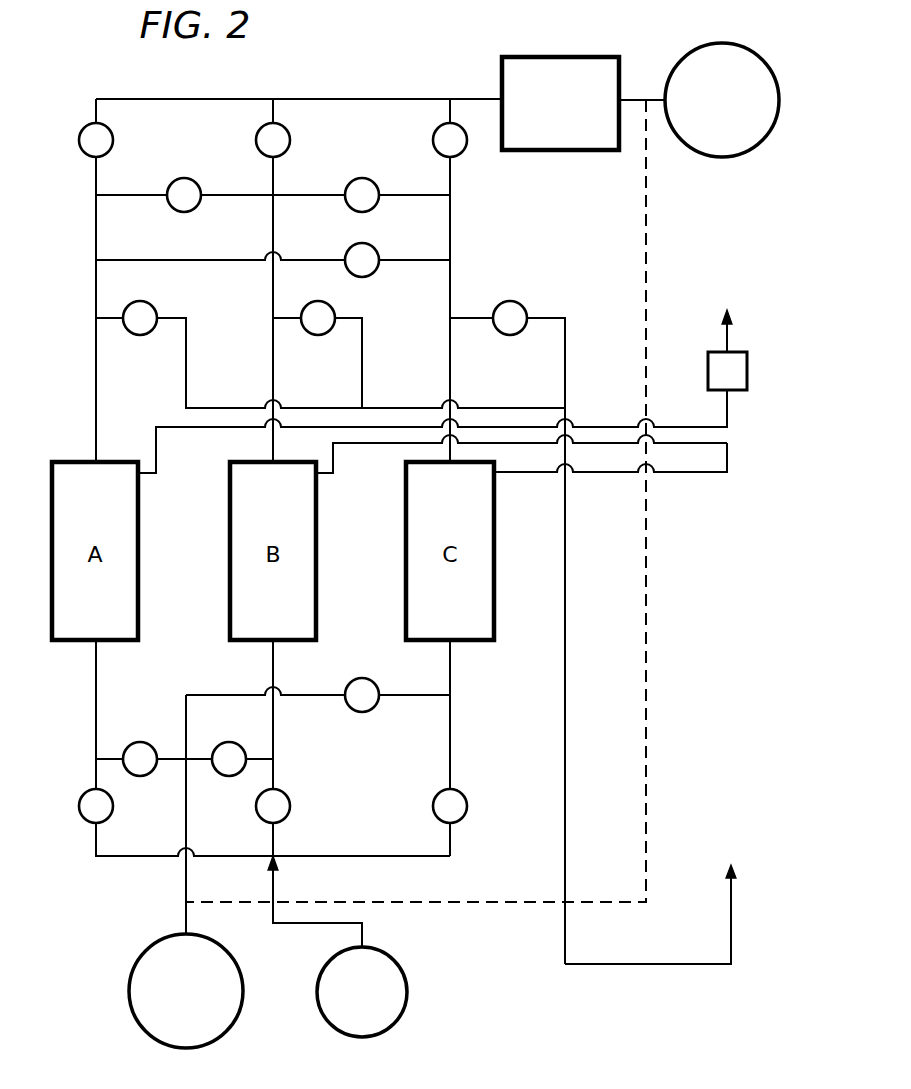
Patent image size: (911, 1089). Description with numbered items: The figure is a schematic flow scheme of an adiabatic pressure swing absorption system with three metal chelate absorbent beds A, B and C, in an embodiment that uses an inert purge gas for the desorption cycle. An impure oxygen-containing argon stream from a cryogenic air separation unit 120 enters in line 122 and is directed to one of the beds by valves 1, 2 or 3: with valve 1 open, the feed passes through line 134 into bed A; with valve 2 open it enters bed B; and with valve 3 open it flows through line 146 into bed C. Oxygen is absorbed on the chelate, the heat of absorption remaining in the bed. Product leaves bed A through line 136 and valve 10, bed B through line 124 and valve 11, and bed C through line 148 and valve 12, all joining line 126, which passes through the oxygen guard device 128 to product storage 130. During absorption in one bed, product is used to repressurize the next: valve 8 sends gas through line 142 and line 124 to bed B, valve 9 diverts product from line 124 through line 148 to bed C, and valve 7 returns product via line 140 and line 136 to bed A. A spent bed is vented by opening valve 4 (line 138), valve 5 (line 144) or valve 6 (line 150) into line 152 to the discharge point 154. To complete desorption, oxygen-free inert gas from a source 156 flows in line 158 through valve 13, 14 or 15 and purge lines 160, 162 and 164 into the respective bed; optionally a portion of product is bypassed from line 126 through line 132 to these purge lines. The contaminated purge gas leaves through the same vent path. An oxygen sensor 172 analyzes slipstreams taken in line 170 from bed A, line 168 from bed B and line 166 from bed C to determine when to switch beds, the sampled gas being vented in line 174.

The valve 1 is at (79, 806).
The valve 2 is at (289, 812).
The valve 3 is at (465, 814).
The valve 4 is at (153, 307).
The valve 5 is at (331, 307).
The valve 6 is at (518, 301).
The valve 7 is at (372, 246).
The valve 8 is at (172, 183).
The valve 9 is at (350, 182).
The valve 10 is at (79, 140).
The valve 11 is at (257, 135).
The valve 12 is at (434, 135).
The valve 13 is at (135, 776).
The valve 14 is at (218, 773).
The valve 15 is at (372, 710).
The cryogenic air separation unit 120 is at (405, 970).
The line 122 is at (273, 878).
The line 124 is at (273, 228).
The line 126 is at (355, 99).
The oxygen guard device 128 is at (555, 57).
The product storage 130 is at (715, 43).
The line 132 is at (646, 265).
The line 134 is at (135, 856).
The line 136 is at (96, 290).
The line 138 is at (186, 365).
The line 140 is at (178, 260).
The line 142 is at (250, 195).
The line 144 is at (362, 365).
The line 146 is at (450, 742).
The line 148 is at (450, 218).
The line 150 is at (565, 362).
The line 152 is at (565, 775).
The discharge point 154 is at (705, 964).
The source 156 is at (130, 960).
The line 158 is at (186, 822).
The purge line 160 is at (110, 759).
The purge line 162 is at (200, 759).
The purge line 164 is at (315, 695).
The line 166 is at (670, 472).
The line 168 is at (335, 465).
The line 170 is at (158, 465).
The oxygen sensor 172 is at (749, 380).
The line 174 is at (732, 332).